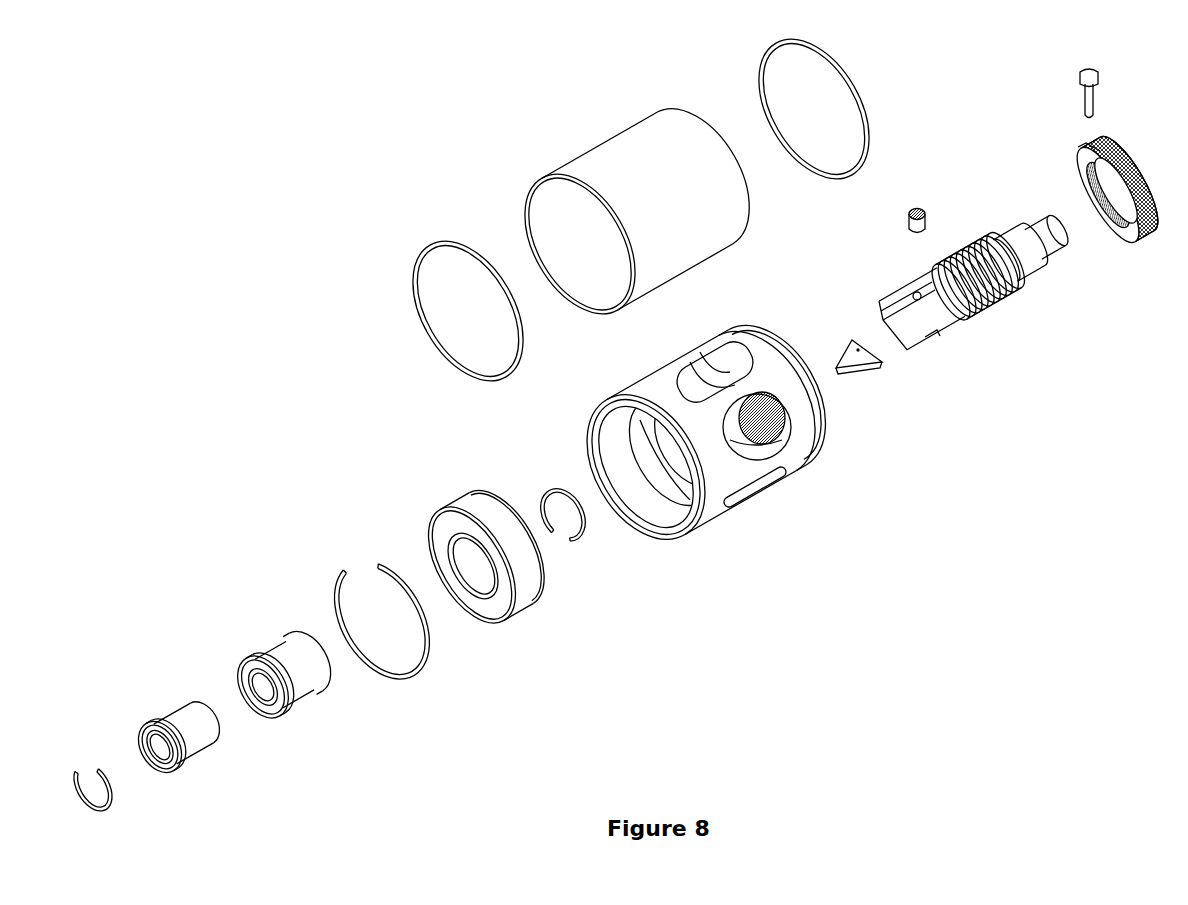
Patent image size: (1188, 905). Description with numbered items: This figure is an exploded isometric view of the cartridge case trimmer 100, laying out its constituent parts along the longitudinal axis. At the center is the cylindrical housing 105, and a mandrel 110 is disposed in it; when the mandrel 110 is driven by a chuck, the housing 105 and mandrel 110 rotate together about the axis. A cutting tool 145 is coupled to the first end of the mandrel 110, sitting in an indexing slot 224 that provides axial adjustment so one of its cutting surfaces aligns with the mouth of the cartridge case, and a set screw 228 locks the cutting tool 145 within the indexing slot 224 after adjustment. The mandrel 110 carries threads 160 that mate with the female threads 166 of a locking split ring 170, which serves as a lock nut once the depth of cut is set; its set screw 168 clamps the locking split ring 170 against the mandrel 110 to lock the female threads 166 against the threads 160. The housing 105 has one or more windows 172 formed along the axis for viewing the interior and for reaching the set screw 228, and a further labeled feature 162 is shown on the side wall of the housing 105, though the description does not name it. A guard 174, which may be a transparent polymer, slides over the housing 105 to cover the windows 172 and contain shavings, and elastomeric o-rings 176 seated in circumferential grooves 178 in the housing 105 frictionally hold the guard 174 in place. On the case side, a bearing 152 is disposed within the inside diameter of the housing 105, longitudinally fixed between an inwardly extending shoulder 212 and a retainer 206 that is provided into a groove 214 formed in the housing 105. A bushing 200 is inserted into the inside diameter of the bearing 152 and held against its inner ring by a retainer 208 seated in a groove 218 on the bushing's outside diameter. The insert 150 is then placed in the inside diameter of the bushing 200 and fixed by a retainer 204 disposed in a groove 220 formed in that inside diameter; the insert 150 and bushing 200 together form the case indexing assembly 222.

The cartridge case trimmer 100 is at (900, 572).
The cylindrical housing 105 is at (696, 429).
The mandrel 110 is at (983, 178).
The cutting tool 145 is at (866, 372).
The insert 150 is at (196, 757).
The bearing 152 is at (525, 618).
The threads 160 is at (985, 322).
The side port 162 is at (775, 440).
The female threads 166 is at (1107, 232).
The set screw 168 is at (1100, 72).
The locking split ring 170 is at (1126, 234).
The windows 172 is at (750, 485).
The guard 174 is at (600, 145).
The elastomeric o-rings 176 is at (416, 257).
The circumferential grooves 178 is at (817, 437).
The bushing 200 is at (311, 671).
The retainer 204 is at (93, 760).
The retainer 206 is at (425, 672).
The retainer 208 is at (585, 540).
The inwardly extending shoulder 212 is at (652, 493).
The groove 214 is at (603, 441).
The groove 218 is at (302, 640).
The groove 220 is at (253, 707).
The case indexing assembly 222 is at (260, 685).
The indexing slot 224 is at (940, 322).
The set screw 228 is at (903, 220).